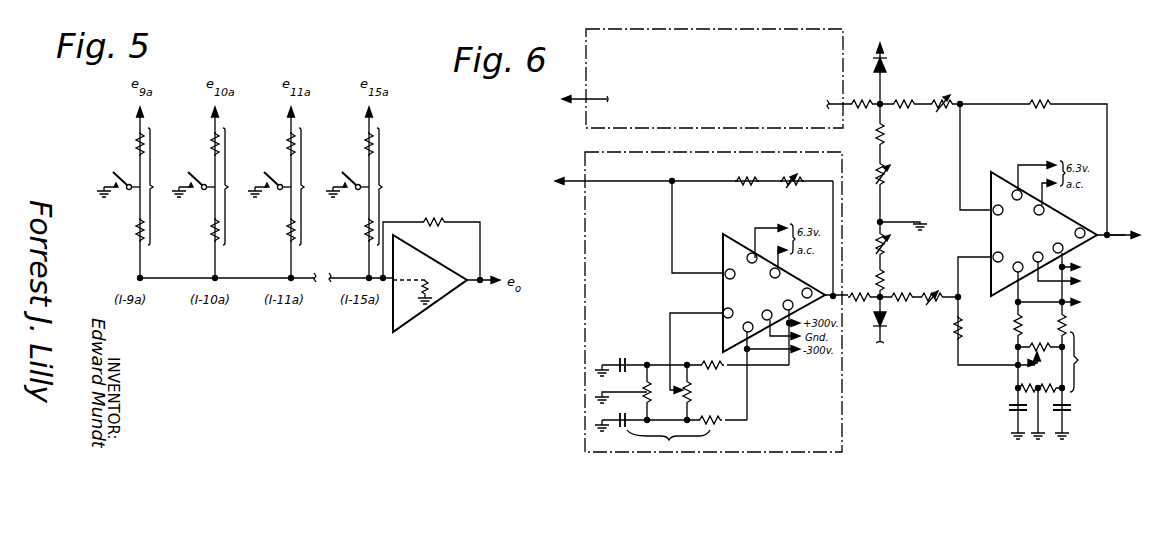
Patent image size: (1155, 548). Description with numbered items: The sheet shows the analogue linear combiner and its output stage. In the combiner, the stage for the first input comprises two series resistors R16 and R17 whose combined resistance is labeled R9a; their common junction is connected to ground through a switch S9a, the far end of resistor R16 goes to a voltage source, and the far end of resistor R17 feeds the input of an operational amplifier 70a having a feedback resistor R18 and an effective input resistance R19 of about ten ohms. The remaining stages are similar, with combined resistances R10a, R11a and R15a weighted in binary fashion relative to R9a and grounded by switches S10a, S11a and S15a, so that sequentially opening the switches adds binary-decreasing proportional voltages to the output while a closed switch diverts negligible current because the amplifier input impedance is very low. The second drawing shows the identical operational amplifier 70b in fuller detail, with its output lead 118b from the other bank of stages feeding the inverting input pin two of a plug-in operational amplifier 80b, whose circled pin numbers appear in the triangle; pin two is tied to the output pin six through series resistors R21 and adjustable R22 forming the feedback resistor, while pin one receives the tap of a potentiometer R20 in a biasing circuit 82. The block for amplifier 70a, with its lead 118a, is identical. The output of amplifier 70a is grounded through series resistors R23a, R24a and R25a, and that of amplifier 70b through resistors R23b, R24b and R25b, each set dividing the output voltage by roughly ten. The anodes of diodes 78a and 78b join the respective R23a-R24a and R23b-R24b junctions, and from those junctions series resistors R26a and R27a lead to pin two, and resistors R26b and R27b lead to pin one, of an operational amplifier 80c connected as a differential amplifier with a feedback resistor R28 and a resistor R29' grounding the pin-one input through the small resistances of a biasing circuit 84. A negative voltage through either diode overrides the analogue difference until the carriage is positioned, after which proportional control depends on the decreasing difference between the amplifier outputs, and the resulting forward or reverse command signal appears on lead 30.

In FIG. 5, the resistor R16 is at (138, 154).
In FIG. 5, the resistor R17 is at (138, 233).
In FIG. 5, the combined resistance R9a is at (155, 187).
In FIG. 5, the switch S9a is at (129, 190).
In FIG. 5, the combined resistance R10a is at (230, 187).
In FIG. 5, the switch S10a is at (204, 190).
In FIG. 5, the combined resistance R11a is at (306, 187).
In FIG. 5, the switch S11a is at (280, 190).
In FIG. 5, the combined resistance R15a is at (382, 187).
In FIG. 5, the switch S15a is at (358, 190).
In FIG. 5, the feedback resistor R18 is at (432, 222).
In FIG. 5, the effective input resistance R19 is at (442, 290).
In FIG. 5, the operational amplifier 70a is at (414, 319).
In FIG. 6, the operational amplifier 70a is at (843, 49).
In FIG. 6, the operational amplifier 70b is at (842, 420).
In FIG. 6, the output lead 118a is at (556, 109).
In FIG. 6, the output lead 118b is at (574, 181).
In FIG. 6, the resistor R21 is at (757, 173).
In FIG. 6, the adjustable resistor R22 is at (793, 173).
In FIG. 6, the operational amplifier 80b is at (812, 284).
In FIG. 6, the operational amplifier 80c is at (1080, 224).
In FIG. 6, the biasing circuit 82 is at (668, 441).
In FIG. 6, the potentiometer R20 is at (693, 394).
In FIG. 6, the resistor R23a is at (868, 94).
In FIG. 6, the resistor R26a is at (910, 94).
In FIG. 6, the resistor R27a is at (938, 100).
In FIG. 6, the feedback resistor R28 is at (1045, 103).
In FIG. 6, the resistor R24a is at (882, 139).
In FIG. 6, the resistor R25a is at (883, 180).
In FIG. 6, the resistor R25b is at (885, 247).
In FIG. 6, the resistor R24b is at (884, 283).
In FIG. 6, the resistor R23b is at (864, 284).
In FIG. 6, the resistor R26b is at (894, 302).
In FIG. 6, the resistor R27b is at (930, 284).
In FIG. 6, the diode 78a is at (890, 66).
In FIG. 6, the diode 78b is at (874, 330).
In FIG. 6, the resistor R29' is at (976, 329).
In FIG. 6, the biasing circuit 84 is at (1064, 346).
In FIG. 6, the lead 30 is at (1118, 235).